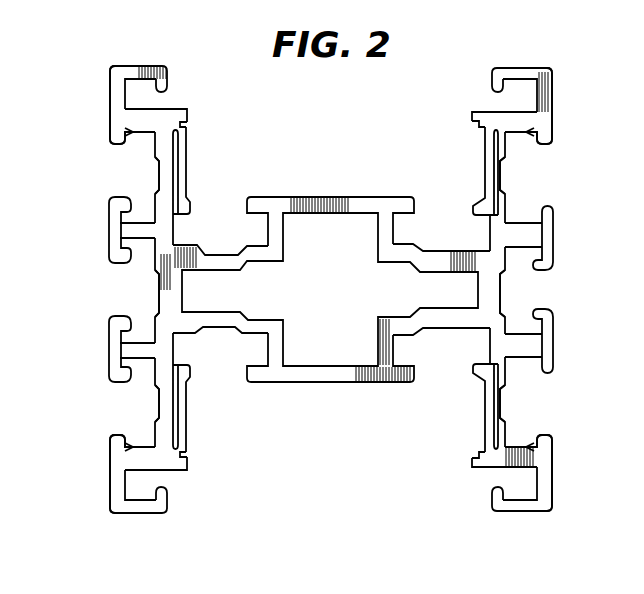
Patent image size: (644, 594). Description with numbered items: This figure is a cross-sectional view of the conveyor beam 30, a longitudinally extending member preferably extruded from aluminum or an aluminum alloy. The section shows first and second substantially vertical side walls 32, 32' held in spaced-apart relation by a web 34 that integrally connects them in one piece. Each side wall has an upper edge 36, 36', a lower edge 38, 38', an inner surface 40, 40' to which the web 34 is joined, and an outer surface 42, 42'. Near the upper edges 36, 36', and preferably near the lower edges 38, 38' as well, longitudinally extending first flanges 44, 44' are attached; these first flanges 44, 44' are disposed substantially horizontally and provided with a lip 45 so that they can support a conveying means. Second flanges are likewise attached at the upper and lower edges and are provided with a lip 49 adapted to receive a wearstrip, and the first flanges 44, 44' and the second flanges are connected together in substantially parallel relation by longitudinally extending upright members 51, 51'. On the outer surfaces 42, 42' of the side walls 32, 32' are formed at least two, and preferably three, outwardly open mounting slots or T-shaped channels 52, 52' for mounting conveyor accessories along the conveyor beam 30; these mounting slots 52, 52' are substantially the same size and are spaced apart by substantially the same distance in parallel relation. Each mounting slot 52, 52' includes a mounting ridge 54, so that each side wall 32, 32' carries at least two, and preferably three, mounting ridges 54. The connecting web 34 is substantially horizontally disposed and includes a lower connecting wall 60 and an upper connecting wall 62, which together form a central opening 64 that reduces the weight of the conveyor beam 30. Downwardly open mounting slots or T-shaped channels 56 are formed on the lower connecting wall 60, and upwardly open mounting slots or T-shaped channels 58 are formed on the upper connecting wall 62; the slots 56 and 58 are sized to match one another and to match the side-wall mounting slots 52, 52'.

The conveyor beam 30 is at (90, 105).
The first side wall 32 is at (186, 289).
The second side wall 32' is at (471, 289).
The web 34 is at (331, 192).
The upper edge 36 is at (174, 96).
The upper edge 36' is at (480, 83).
The lower edge 38 is at (172, 422).
The lower edge 38' is at (480, 426).
The inner surface 40 is at (200, 186).
The inner surface 40' is at (454, 182).
The outer surface 42 is at (115, 313).
The outer surface 42' is at (555, 272).
The first flange 44 is at (137, 289).
The first flange 44' is at (524, 296).
The lip 45 is at (168, 80).
The lip 49 is at (186, 127).
The upright member 51 is at (106, 277).
The upright member 51' is at (556, 282).
The mounting slot 52 is at (97, 300).
The mounting slot 52' is at (553, 289).
The mounting ridge 54 is at (124, 134).
The downwardly open mounting slot 56 is at (222, 348).
The upwardly open mounting slot 58 is at (218, 243).
The lower connecting wall 60 is at (358, 385).
The upper connecting wall 62 is at (352, 195).
The central opening 64 is at (345, 303).